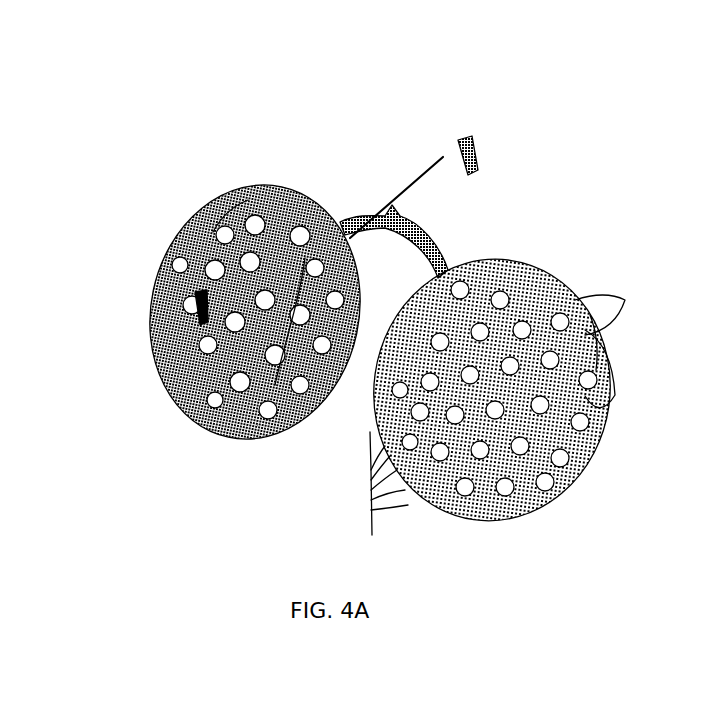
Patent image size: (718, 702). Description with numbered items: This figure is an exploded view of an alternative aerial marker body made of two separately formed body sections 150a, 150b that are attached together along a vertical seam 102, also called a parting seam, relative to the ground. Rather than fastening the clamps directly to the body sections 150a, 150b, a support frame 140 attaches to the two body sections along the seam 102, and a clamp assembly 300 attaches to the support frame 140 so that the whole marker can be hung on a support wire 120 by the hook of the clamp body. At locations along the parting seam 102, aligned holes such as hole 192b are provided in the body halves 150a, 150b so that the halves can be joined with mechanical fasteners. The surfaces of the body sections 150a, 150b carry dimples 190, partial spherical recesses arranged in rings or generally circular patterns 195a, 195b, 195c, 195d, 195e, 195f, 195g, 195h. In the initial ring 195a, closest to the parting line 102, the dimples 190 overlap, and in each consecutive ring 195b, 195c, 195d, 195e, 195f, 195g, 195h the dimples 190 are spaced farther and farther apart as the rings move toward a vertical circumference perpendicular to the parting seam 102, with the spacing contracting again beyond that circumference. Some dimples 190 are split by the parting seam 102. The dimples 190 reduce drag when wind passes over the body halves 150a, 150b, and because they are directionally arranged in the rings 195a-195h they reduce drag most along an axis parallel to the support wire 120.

The vertical seam 102 is at (717, 652).
The support wire 120 is at (368, 200).
The support frame 140 is at (442, 240).
The body section 150a is at (235, 208).
The body section 150b is at (528, 302).
The dimples 190 is at (578, 300).
The aligned hole 192b is at (717, 566).
The circular pattern 195a is at (167, 400).
The circular pattern 195b is at (152, 298).
The circular pattern 195c is at (170, 252).
The circular pattern 195d is at (185, 220).
The circular pattern 195e is at (230, 205).
The circular pattern 195f is at (278, 196).
The circular pattern 195g is at (352, 370).
The circular pattern 195h is at (360, 362).
The clamp assembly 300 is at (477, 140).